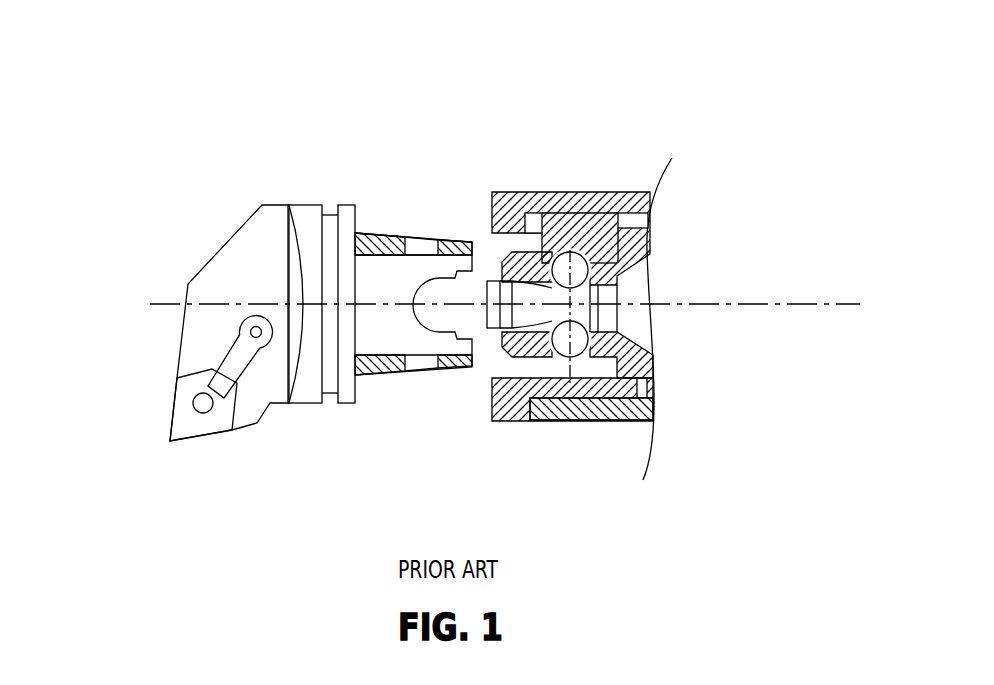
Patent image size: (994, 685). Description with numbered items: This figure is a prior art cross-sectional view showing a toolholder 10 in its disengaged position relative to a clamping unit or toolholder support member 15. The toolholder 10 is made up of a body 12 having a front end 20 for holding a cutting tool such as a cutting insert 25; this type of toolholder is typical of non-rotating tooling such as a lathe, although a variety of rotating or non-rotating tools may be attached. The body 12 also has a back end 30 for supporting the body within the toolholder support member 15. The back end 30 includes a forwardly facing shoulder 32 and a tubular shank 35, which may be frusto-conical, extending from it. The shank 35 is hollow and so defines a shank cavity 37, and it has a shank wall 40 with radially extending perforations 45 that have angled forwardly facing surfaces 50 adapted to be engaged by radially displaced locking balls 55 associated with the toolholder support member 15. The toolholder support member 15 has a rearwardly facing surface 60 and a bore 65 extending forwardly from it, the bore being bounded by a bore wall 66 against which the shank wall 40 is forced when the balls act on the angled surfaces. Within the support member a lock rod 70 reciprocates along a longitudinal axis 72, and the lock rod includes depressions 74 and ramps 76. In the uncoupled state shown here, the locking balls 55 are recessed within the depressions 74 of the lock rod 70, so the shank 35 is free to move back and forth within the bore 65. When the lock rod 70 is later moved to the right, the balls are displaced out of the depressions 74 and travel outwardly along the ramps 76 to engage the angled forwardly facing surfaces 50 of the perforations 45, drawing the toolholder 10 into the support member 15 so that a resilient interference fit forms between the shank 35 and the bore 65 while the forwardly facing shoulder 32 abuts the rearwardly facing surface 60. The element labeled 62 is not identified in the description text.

The toolholder 10 is at (224, 190).
The body 12 is at (308, 210).
The toolholder support member 15 is at (545, 142).
The front end 20 is at (228, 268).
The cutting insert 25 is at (183, 424).
The back end 30 is at (389, 412).
The forwardly facing shoulder 32 is at (356, 212).
The tubular shank 35 is at (363, 232).
The shank cavity 37 is at (380, 340).
The shank wall 40 is at (388, 232).
The radially extending perforations 45 is at (427, 240).
The angled forwardly facing surfaces 50 is at (437, 240).
The locking balls 55 is at (628, 272).
The rearwardly facing surface 60 is at (490, 412).
The housing ring 62 is at (627, 418).
The bore 65 is at (605, 370).
The bore wall 66 is at (577, 247).
The lock rod 70 is at (633, 293).
The longitudinal axis 72 is at (838, 304).
The depressions 74 is at (605, 288).
The ramps 76 is at (548, 238).